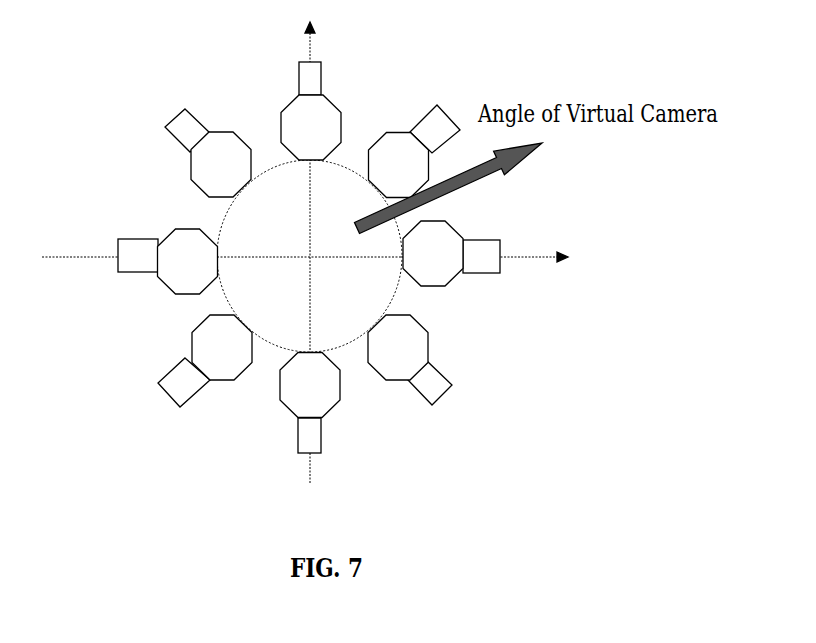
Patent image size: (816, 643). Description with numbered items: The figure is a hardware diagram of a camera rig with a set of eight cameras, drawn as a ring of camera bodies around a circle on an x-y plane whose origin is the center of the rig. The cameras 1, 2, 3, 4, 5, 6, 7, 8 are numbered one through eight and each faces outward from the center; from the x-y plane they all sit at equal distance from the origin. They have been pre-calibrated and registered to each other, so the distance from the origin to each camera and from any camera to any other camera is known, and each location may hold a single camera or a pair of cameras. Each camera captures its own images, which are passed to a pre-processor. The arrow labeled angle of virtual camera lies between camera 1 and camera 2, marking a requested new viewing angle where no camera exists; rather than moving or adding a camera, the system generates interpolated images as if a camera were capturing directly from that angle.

The camera 1 is at (415, 151).
The camera 2 is at (451, 253).
The camera 3 is at (410, 360).
The camera 4 is at (310, 403).
The camera 5 is at (205, 361).
The camera 6 is at (168, 261).
The camera 7 is at (208, 153).
The camera 8 is at (311, 111).